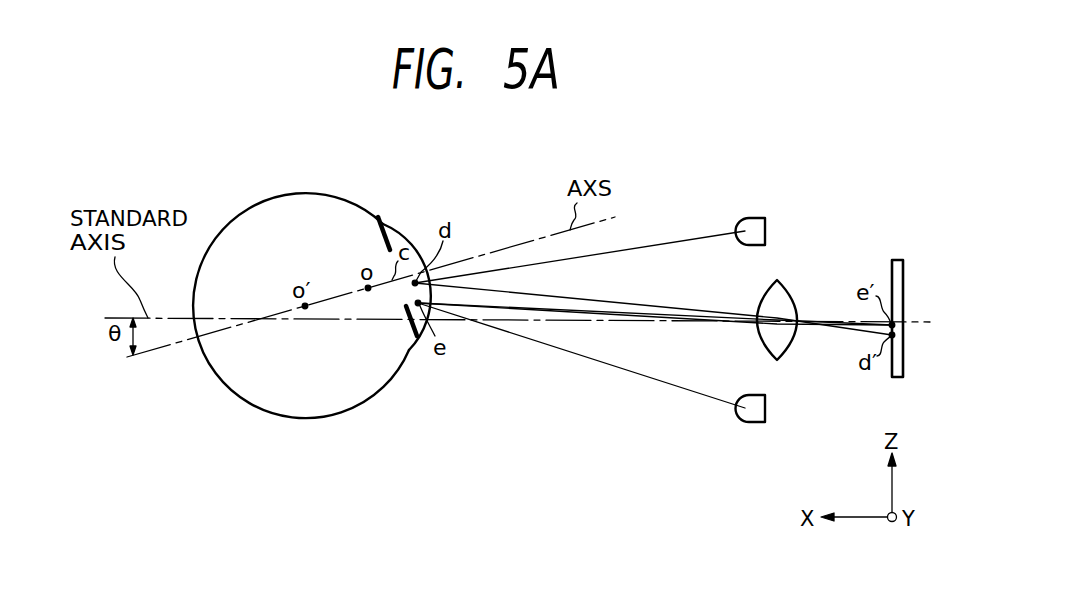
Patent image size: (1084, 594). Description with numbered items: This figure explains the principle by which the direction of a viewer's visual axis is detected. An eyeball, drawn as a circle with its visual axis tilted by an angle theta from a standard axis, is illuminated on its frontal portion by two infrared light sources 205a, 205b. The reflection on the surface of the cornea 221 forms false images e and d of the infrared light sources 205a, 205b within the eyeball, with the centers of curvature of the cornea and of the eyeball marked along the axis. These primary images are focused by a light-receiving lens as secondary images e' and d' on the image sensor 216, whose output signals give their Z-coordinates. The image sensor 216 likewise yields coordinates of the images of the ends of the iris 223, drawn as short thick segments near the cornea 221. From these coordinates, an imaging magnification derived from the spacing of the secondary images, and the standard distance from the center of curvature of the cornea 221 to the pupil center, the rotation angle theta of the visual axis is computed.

The cornea 221 is at (425, 245).
The iris 223 is at (380, 222).
The infrared light source 205a is at (766, 424).
The infrared light source 205b is at (766, 217).
The image sensor 216 is at (897, 260).